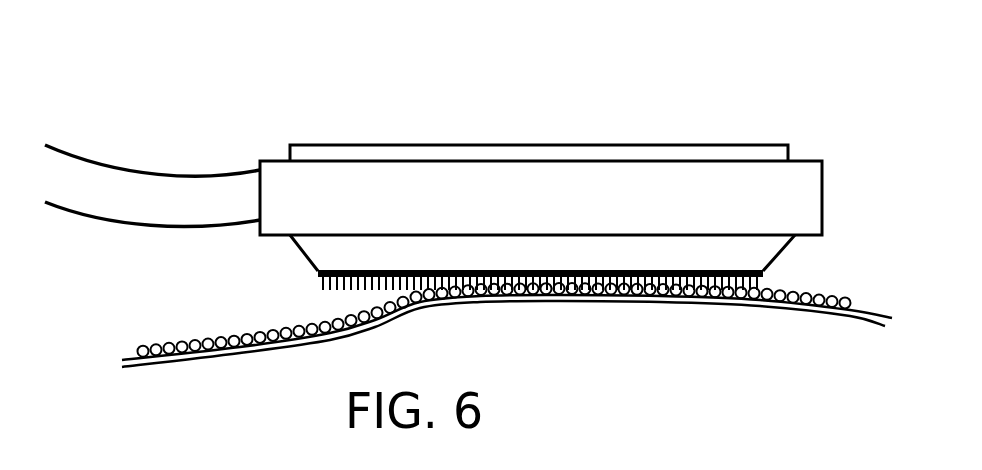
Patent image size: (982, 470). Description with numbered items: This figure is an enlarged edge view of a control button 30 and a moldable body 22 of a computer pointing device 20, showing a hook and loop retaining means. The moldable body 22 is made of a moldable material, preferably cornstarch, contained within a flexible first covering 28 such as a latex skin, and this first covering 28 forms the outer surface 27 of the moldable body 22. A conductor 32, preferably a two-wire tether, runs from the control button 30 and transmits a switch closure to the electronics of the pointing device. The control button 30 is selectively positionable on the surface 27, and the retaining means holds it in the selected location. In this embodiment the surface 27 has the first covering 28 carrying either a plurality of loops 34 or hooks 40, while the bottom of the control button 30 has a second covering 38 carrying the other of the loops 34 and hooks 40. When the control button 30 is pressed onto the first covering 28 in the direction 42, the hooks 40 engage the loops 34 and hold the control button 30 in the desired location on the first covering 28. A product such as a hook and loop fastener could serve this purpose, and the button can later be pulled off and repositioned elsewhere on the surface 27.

The computer pointing device 20 is at (733, 112).
The moldable body 22 is at (507, 301).
The outer surface 27 is at (840, 317).
The first covering 28 is at (873, 313).
The control button 30 is at (370, 144).
The conductor 32 is at (145, 173).
The loops 34 is at (173, 338).
The second covering 38 is at (320, 275).
The hooks 40 is at (325, 290).
The direction 42 is at (610, 125).